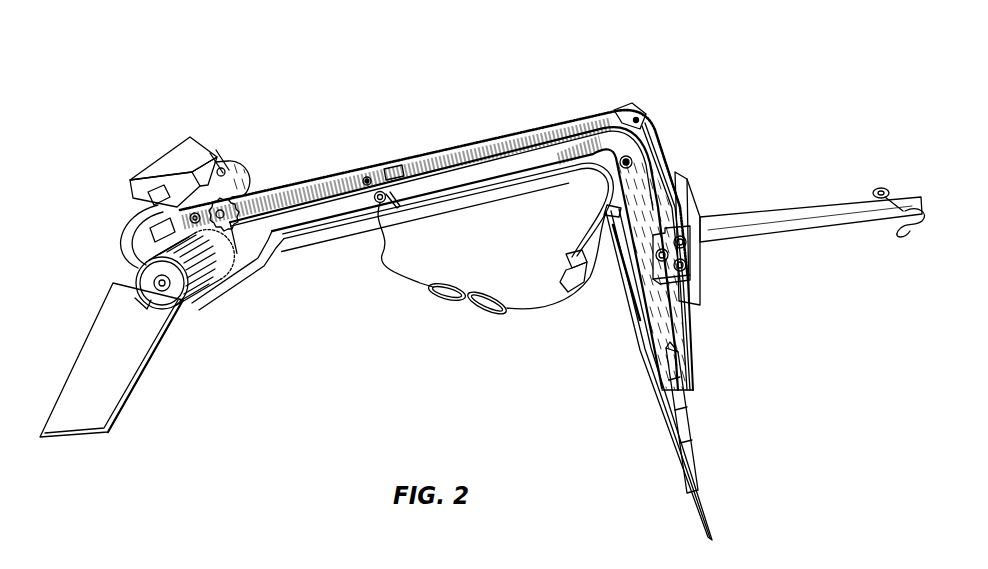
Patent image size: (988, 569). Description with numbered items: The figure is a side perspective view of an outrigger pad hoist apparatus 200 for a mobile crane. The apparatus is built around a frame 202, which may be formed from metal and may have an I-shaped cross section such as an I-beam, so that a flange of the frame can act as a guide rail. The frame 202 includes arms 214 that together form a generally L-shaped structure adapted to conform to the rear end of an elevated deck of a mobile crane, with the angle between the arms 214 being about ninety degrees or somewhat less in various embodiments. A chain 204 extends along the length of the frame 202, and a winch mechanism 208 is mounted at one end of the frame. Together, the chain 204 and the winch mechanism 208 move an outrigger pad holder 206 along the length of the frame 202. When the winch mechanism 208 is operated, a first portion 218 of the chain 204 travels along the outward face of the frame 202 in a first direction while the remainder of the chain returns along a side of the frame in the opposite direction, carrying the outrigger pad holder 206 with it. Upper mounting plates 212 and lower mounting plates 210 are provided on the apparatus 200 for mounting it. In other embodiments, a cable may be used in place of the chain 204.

The outrigger pad hoist apparatus 200 is at (199, 55).
The frame 202 is at (470, 176).
The chain 204 is at (294, 179).
The outrigger pad holder 206 is at (697, 197).
The winch mechanism 208 is at (150, 156).
The lower mounting plates 210 is at (697, 423).
The upper mounting plates 212 is at (124, 384).
The arms 214 is at (313, 215).
The first portion of the chain 218 is at (386, 168).